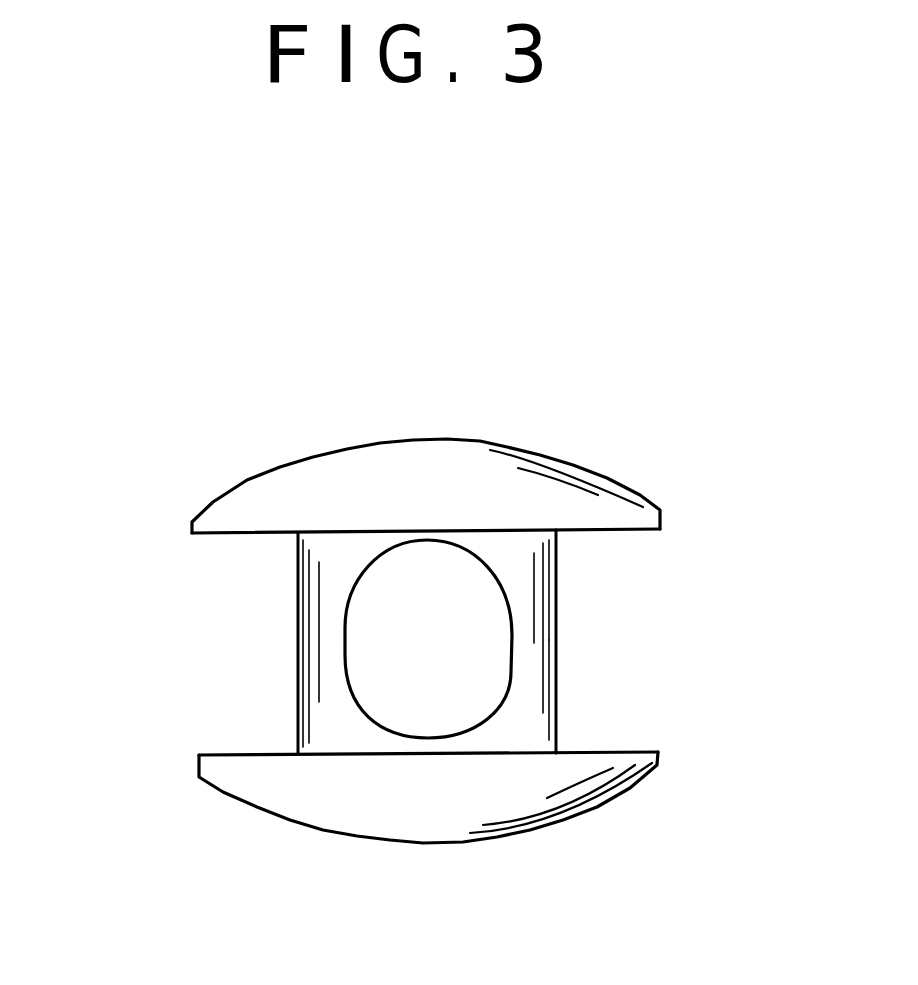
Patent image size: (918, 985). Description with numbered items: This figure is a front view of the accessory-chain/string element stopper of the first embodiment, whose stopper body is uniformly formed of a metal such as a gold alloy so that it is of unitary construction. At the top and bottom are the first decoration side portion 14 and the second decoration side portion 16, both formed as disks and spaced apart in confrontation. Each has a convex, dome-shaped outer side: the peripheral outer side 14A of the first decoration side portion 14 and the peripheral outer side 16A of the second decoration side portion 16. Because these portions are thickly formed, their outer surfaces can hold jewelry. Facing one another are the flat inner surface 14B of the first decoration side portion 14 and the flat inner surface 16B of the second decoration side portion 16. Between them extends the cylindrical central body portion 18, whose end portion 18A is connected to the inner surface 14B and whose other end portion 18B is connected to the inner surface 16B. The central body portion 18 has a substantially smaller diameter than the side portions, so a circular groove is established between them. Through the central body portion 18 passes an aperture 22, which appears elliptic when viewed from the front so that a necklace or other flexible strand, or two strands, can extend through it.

The first decoration side portion 14 is at (500, 441).
The peripheral outer side 14A is at (593, 483).
The flat inner surface 14B is at (233, 534).
The second decoration side portion 16 is at (505, 838).
The peripheral outer side 16A is at (355, 817).
The flat inner surface 16B is at (238, 754).
The central body portion 18 is at (557, 653).
The end portion 18A is at (556, 533).
The end portion 18B is at (556, 750).
The aperture 22 is at (378, 636).